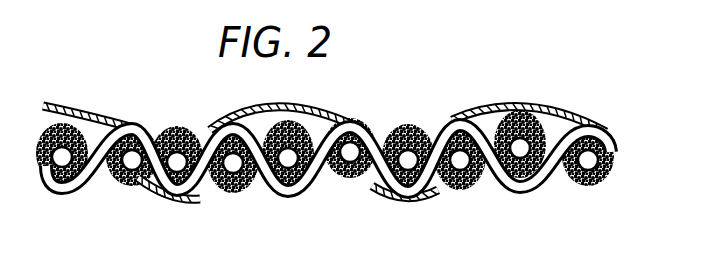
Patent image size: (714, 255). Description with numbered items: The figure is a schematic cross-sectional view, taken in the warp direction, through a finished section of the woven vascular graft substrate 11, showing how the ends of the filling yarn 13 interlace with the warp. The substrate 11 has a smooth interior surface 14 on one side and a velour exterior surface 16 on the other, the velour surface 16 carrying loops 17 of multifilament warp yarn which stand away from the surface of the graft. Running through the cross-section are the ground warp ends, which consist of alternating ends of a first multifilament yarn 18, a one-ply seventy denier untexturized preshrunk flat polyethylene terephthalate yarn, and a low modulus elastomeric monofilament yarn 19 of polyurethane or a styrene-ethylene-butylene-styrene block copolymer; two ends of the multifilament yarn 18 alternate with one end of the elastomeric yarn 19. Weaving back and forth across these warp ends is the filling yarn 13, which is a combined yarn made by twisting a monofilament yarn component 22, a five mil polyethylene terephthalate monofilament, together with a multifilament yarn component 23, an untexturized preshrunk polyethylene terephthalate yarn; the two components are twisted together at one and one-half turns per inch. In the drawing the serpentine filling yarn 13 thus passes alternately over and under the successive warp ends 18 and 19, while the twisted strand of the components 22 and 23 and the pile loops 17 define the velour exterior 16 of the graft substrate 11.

The woven vascular graft substrate 11 is at (621, 95).
The filling yarn 13 is at (532, 172).
The smooth interior surface 14 is at (122, 214).
The velour exterior surface 16 is at (385, 91).
The loops 17 is at (558, 100).
The first multifilament yarn 18 is at (235, 192).
The low modulus elastomeric monofilament yarn 19 is at (289, 189).
The monofilament yarn component 22 is at (133, 172).
The multifilament yarn component 23 is at (124, 136).